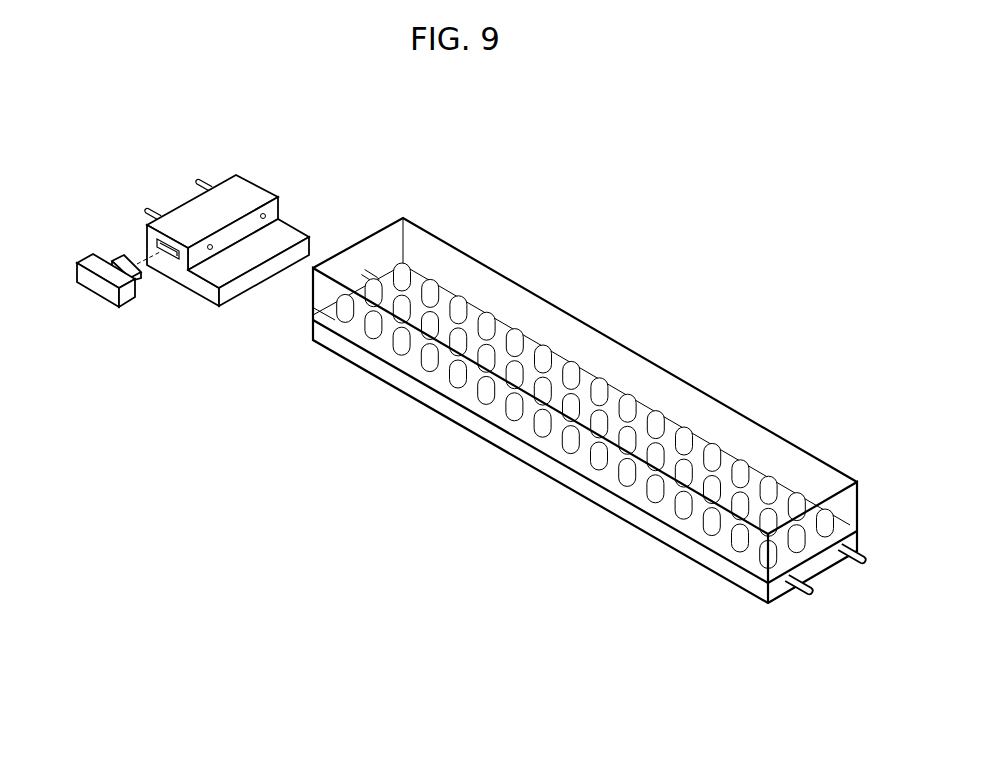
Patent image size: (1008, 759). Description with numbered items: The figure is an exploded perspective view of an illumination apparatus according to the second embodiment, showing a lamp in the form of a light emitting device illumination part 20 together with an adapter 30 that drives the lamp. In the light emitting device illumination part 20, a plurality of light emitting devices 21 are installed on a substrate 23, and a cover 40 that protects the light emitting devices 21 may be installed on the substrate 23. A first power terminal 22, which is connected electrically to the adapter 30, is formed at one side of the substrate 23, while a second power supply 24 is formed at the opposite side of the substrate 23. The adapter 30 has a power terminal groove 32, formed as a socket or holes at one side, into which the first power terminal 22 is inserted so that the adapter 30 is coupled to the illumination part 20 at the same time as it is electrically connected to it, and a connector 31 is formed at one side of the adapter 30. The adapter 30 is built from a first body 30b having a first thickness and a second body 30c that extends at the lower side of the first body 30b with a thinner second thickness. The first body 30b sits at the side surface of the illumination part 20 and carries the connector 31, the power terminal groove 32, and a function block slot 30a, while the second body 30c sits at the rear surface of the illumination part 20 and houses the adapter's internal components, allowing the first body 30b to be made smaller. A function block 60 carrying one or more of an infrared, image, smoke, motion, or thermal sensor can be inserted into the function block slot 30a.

The light emitting device illumination part 20 is at (565, 440).
The light emitting devices 21 is at (683, 515).
The first power terminal 22 is at (312, 308).
The substrate 23 is at (710, 560).
The second power supply 24 is at (793, 588).
The adapter 30 is at (259, 232).
The function block slot 30a is at (170, 259).
The first body 30b is at (257, 182).
The second body 30c is at (291, 229).
The connector 31 is at (157, 207).
The power terminal groove 32 is at (263, 213).
The cover 40 is at (649, 372).
The function block 60 is at (97, 309).